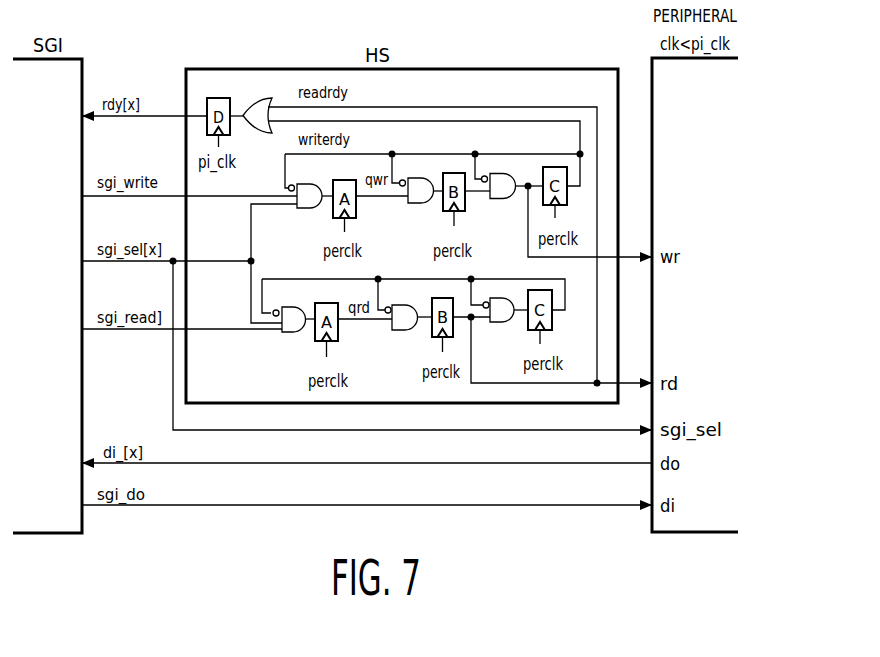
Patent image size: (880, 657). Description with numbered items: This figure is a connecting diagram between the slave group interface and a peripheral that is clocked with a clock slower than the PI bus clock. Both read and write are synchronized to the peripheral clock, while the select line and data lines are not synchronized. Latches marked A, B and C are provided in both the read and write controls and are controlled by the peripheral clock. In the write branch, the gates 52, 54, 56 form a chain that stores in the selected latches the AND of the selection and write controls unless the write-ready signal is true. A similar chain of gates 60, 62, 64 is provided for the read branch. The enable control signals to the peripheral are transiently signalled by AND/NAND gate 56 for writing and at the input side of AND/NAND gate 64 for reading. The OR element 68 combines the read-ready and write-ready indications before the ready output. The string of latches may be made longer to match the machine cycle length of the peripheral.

The AND/NAND gate 52 is at (306, 212).
The AND/NAND gate 54 is at (414, 206).
The AND/NAND gate 56 is at (496, 201).
The AND/NAND gate 60 is at (290, 335).
The AND/NAND gate 62 is at (400, 333).
The AND/NAND gate 64 is at (497, 325).
The OR gate 68 is at (258, 99).